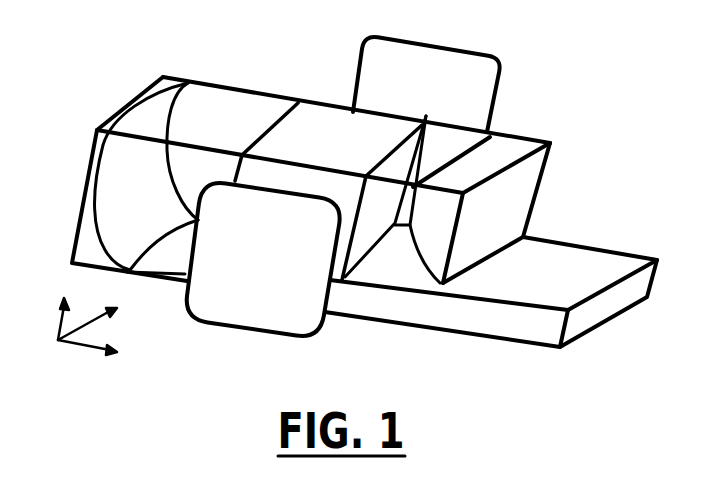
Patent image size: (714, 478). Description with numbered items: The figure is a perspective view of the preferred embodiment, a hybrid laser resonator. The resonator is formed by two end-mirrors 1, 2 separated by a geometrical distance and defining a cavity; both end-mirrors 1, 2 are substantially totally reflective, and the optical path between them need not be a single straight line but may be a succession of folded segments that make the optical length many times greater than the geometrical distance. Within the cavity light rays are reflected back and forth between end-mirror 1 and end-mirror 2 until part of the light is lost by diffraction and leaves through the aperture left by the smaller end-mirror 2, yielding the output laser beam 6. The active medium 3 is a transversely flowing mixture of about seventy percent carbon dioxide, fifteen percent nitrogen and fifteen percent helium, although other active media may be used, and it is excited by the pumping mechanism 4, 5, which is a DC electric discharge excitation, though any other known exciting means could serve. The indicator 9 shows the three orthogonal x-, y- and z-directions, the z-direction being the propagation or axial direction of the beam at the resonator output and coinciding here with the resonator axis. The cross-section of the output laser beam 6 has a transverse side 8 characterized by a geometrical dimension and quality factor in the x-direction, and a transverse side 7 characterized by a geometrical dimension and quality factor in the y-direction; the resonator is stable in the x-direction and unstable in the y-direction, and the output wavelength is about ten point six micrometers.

The end-mirror 1 is at (88, 158).
The end-mirror 2 is at (547, 174).
The active medium 3 is at (298, 115).
The pumping mechanism 4 is at (240, 327).
The pumping mechanism 5 is at (450, 38).
The output laser beam 6 is at (613, 300).
The transverse side 7 is at (557, 327).
The transverse side 8 is at (612, 275).
The indicator 9 is at (58, 340).